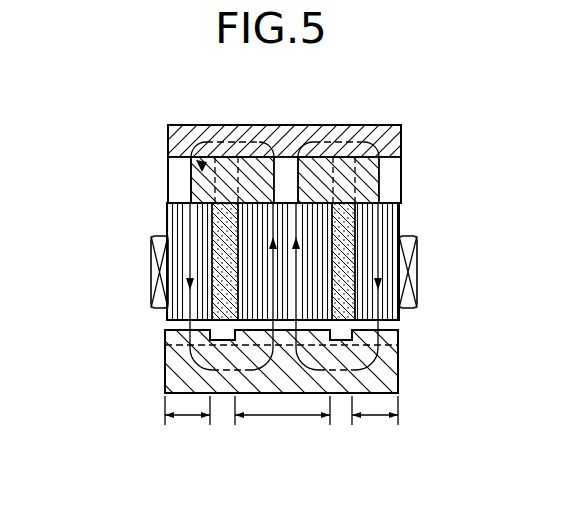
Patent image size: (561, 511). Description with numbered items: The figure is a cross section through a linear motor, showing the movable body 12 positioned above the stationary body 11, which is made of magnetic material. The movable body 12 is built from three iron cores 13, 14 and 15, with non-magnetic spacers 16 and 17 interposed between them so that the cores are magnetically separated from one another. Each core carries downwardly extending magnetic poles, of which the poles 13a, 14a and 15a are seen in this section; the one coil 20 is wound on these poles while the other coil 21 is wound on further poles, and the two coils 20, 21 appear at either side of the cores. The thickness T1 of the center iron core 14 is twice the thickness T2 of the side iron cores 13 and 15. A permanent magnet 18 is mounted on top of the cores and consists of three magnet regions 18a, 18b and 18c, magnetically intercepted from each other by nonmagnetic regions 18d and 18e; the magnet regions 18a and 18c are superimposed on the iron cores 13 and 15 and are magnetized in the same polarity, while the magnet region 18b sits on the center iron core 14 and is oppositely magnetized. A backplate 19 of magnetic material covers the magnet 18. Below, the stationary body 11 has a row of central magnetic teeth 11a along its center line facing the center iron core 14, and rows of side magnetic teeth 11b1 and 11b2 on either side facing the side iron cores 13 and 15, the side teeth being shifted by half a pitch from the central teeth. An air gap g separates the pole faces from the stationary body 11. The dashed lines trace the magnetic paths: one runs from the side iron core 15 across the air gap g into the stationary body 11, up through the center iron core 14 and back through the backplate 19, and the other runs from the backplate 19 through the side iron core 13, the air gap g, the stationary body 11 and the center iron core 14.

The stationary body 11 is at (281, 402).
The central magnetic teeth 11a is at (232, 340).
The side magnetic teeth 11b1 is at (400, 343).
The side magnetic teeth 11b2 is at (172, 333).
The movable body 12 is at (288, 143).
The iron core 13 is at (401, 220).
The magnetic pole 13a is at (393, 328).
The center iron core 14 is at (283, 334).
The magnetic pole 14a is at (343, 320).
The iron core 15 is at (250, 233).
The magnetic pole 15a is at (168, 324).
The spacer 16 is at (387, 225).
The spacer 17 is at (218, 270).
The permanent magnet 18 is at (288, 143).
The magnet region 18a is at (403, 182).
The magnet region 18b is at (288, 167).
The magnet region 18c is at (168, 173).
The nonmagnetic region 18d is at (347, 172).
The nonmagnetic region 18e is at (227, 167).
The backplate 19 is at (377, 135).
The coil 20 is at (153, 265).
The coil 21 is at (408, 272).
The air gap g is at (397, 337).
The thickness of the center iron core T1 is at (283, 418).
The thickness of the side iron cores T2 is at (190, 418).